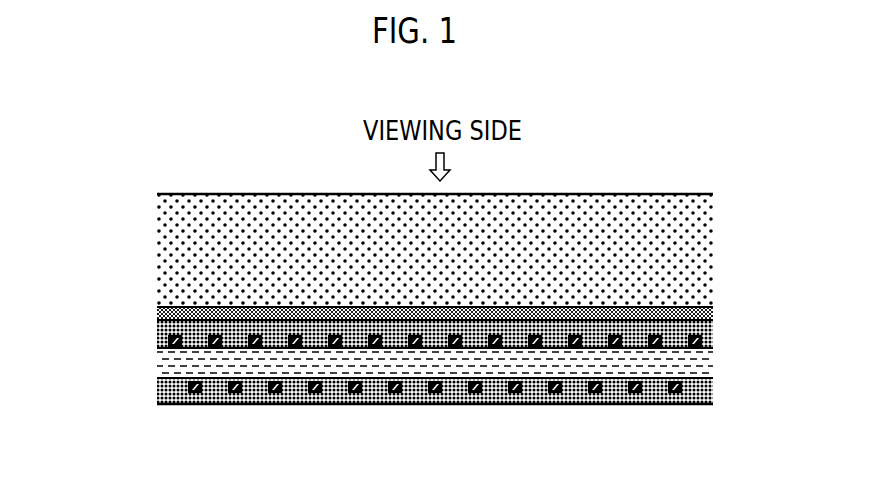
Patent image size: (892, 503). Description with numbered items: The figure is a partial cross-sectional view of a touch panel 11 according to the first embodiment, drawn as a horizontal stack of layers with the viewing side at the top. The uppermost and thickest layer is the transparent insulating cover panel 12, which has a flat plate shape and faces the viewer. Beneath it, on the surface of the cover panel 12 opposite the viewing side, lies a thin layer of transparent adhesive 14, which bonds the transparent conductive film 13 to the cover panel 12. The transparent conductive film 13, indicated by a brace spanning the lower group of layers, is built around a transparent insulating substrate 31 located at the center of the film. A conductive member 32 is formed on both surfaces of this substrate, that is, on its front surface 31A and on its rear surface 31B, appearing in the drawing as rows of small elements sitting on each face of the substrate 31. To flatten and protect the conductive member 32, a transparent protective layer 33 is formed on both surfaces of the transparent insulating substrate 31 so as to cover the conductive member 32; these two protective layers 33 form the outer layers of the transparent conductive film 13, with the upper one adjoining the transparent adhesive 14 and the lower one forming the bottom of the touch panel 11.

The touch panel 11 is at (706, 178).
The cover panel 12 is at (713, 230).
The transparent conductive film 13 is at (433, 351).
The transparent adhesive 14 is at (710, 318).
The transparent insulating substrate 31 is at (155, 367).
The front surface 31A is at (195, 348).
The rear surface 31B is at (178, 383).
The conductive member 32 is at (277, 386).
The transparent protective layer 33 is at (158, 332).